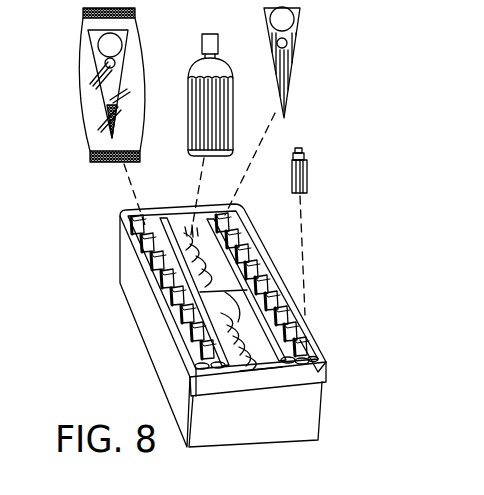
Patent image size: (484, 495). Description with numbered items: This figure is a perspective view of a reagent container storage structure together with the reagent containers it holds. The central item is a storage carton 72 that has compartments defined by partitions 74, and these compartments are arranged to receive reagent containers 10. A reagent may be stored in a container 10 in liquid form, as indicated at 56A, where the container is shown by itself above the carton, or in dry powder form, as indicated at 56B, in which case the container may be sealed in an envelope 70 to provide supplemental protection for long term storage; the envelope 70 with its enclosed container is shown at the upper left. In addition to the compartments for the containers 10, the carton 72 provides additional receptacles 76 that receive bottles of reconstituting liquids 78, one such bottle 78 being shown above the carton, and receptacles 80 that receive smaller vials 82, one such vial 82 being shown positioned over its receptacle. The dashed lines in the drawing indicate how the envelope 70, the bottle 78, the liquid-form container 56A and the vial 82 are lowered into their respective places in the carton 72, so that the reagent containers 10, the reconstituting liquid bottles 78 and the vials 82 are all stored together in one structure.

The container 10 is at (198, 59).
The reagent in liquid form 56A is at (290, 78).
The reagent in dry powder form 56B is at (102, 112).
The envelope 70 is at (114, 100).
The storage carton 72 is at (162, 383).
The partitions 74 is at (175, 327).
The receptacles 76 is at (178, 222).
The bottles of reconstituting liquids 78 is at (190, 107).
The receptacles 80 is at (315, 357).
The vials 82 is at (305, 173).